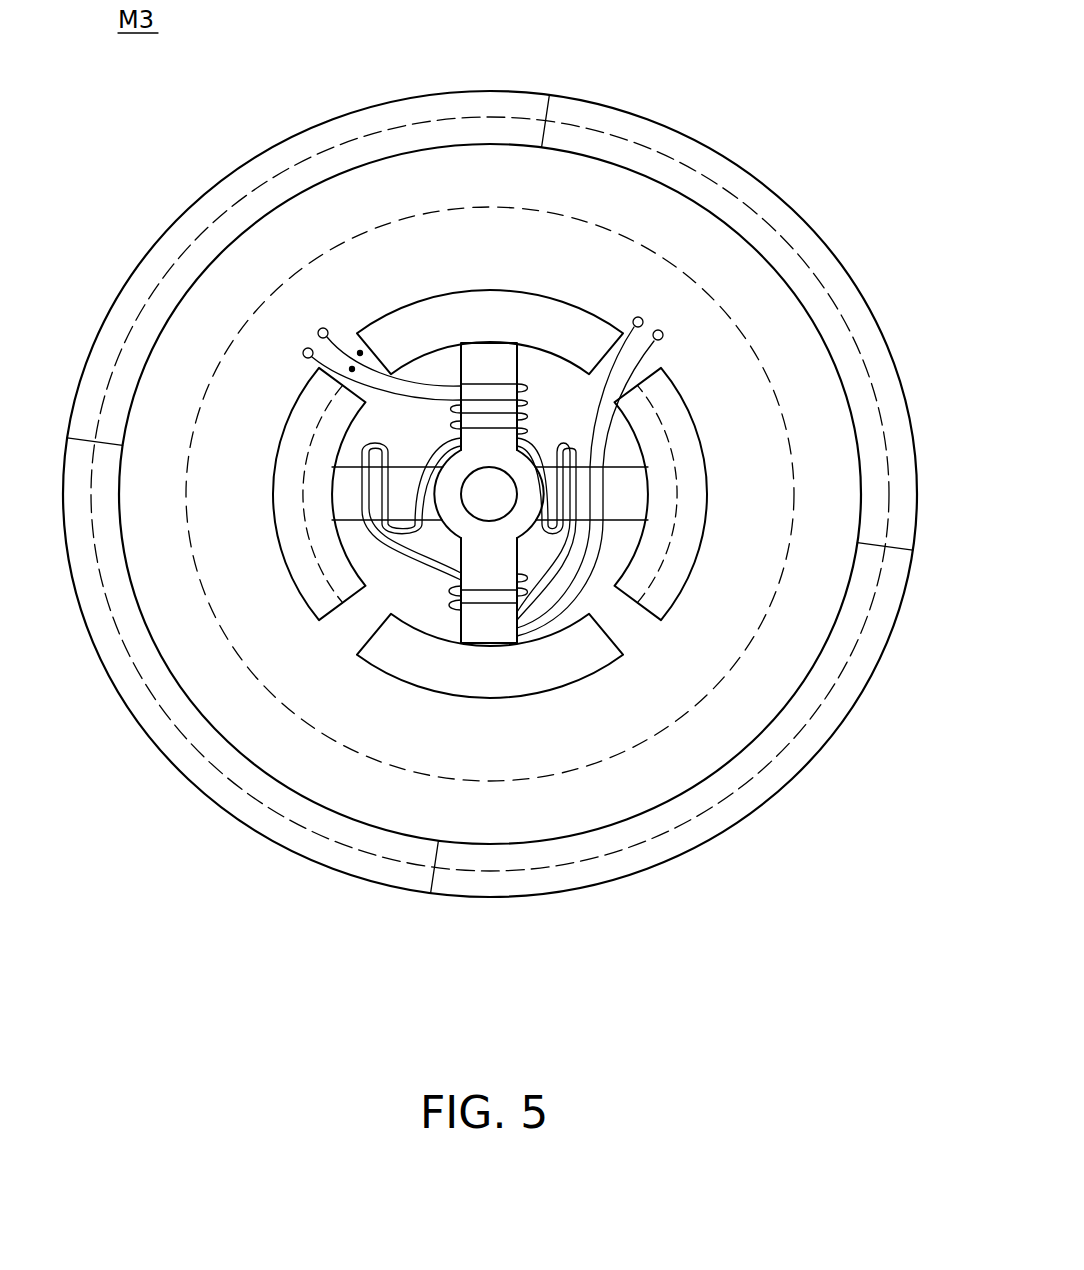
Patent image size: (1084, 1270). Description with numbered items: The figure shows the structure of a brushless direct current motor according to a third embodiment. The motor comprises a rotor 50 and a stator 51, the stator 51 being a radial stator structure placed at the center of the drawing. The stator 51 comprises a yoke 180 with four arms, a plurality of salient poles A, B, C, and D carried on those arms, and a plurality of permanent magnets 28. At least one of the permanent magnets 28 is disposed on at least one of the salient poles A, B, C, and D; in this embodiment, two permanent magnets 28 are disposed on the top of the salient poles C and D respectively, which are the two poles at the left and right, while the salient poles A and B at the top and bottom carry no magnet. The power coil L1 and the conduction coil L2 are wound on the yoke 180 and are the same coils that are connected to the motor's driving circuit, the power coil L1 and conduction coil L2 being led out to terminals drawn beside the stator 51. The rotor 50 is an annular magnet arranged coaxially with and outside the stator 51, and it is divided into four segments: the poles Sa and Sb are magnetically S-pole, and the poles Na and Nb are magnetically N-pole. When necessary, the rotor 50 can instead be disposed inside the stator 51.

The rotor 50 is at (622, 108).
The stator 51 is at (487, 207).
The yoke 180 is at (533, 453).
The permanent magnets 28 is at (489, 494).
The salient pole A is at (487, 290).
The salient pole B is at (487, 697).
The salient pole C is at (280, 450).
The salient pole D is at (685, 402).
The power coil L1 is at (335, 330).
The conduction coil L2 is at (303, 355).